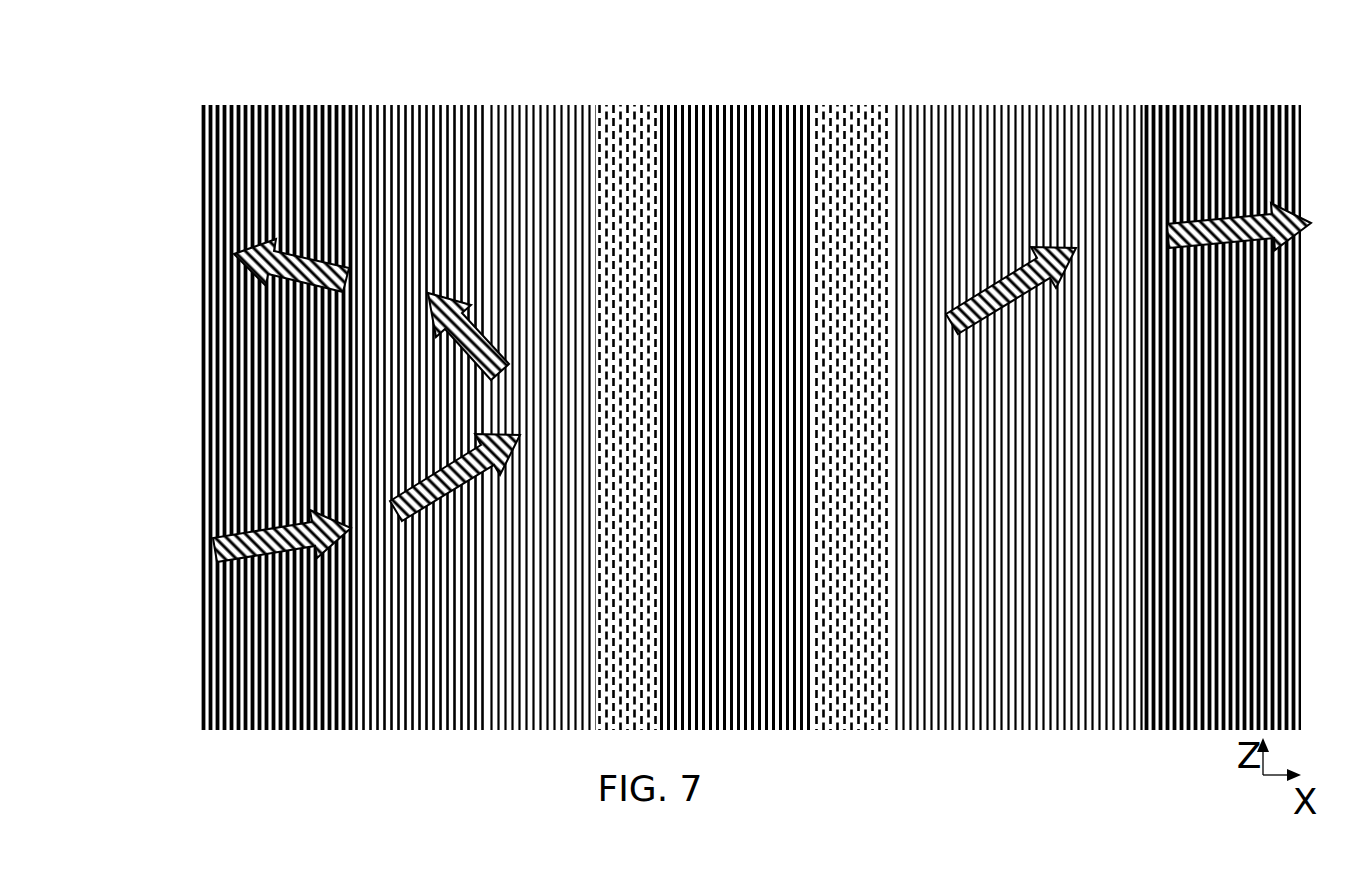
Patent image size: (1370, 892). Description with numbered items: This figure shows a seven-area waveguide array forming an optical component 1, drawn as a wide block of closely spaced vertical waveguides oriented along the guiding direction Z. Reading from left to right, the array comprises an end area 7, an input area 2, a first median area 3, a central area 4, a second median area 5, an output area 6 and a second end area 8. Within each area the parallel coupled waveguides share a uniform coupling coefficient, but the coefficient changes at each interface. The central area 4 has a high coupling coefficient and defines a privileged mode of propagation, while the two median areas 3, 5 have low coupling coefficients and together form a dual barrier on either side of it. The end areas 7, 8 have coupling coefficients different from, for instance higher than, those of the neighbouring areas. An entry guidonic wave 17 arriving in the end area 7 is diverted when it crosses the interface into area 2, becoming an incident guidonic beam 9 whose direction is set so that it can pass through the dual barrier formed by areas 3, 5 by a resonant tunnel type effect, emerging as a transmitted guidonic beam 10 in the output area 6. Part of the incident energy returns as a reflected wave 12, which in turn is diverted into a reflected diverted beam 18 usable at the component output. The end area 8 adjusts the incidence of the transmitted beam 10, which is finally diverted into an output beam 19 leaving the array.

The waveguide array 1 is at (750, 431).
The input area 2 is at (456, 116).
The median area 3 is at (600, 100).
The central area 4 is at (690, 115).
The median area 5 is at (865, 705).
The output area 6 is at (1060, 705).
The end area 7 is at (265, 100).
The end area 8 is at (1210, 115).
The incident guidonic beam 9 is at (452, 482).
The transmitted guidonic beam 10 is at (975, 277).
The reflected wave 12 is at (478, 330).
The entry guidonic wave 17 is at (240, 514).
The reflected diverted beam 18 is at (254, 268).
The transmitted light beam 19 is at (1256, 236).